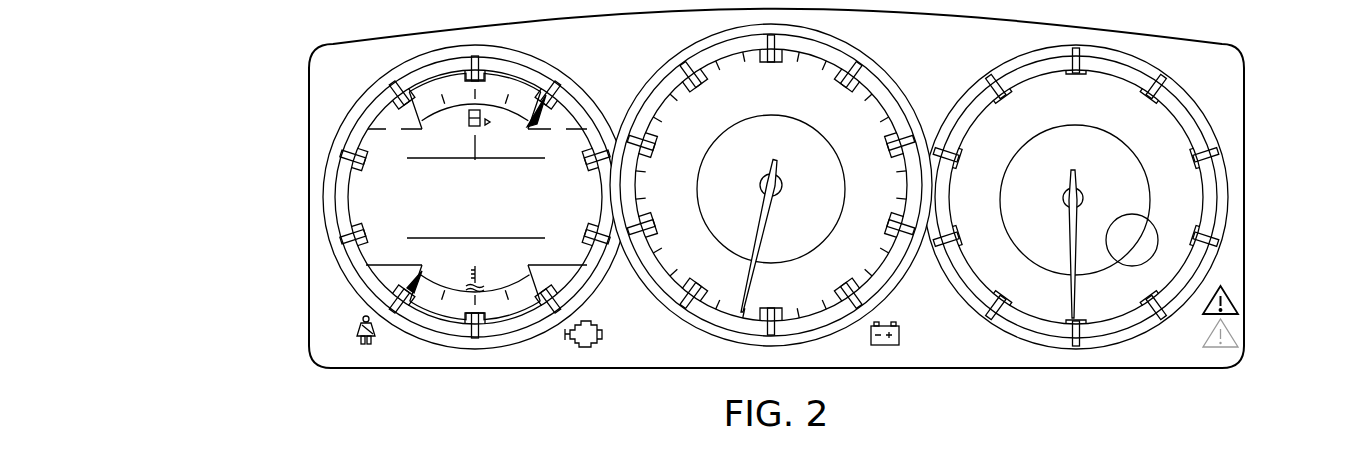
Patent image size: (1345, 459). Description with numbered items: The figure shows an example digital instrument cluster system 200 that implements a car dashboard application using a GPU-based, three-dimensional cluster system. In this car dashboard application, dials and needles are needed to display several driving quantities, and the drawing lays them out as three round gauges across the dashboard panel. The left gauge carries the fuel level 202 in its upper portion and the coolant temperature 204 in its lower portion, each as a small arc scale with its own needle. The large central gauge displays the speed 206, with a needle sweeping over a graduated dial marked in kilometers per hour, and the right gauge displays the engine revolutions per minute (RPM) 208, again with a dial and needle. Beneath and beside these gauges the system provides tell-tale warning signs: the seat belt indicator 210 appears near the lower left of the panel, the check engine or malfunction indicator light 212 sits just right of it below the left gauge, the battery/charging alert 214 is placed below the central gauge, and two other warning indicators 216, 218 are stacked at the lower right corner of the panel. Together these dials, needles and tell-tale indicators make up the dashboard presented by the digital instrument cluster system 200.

The digital instrument cluster system 200 is at (285, 172).
The fuel level 202 is at (330, 136).
The coolant temperature 204 is at (498, 318).
The speed 206 is at (640, 70).
The engine revolutions per minute (RPM) 208 is at (1234, 162).
The seat belt indicator 210 is at (366, 347).
The check engine or malfunction indicator light 212 is at (580, 347).
The battery/charging alert 214 is at (886, 347).
The warning indicator 216 is at (1236, 301).
The warning indicator 218 is at (1236, 334).